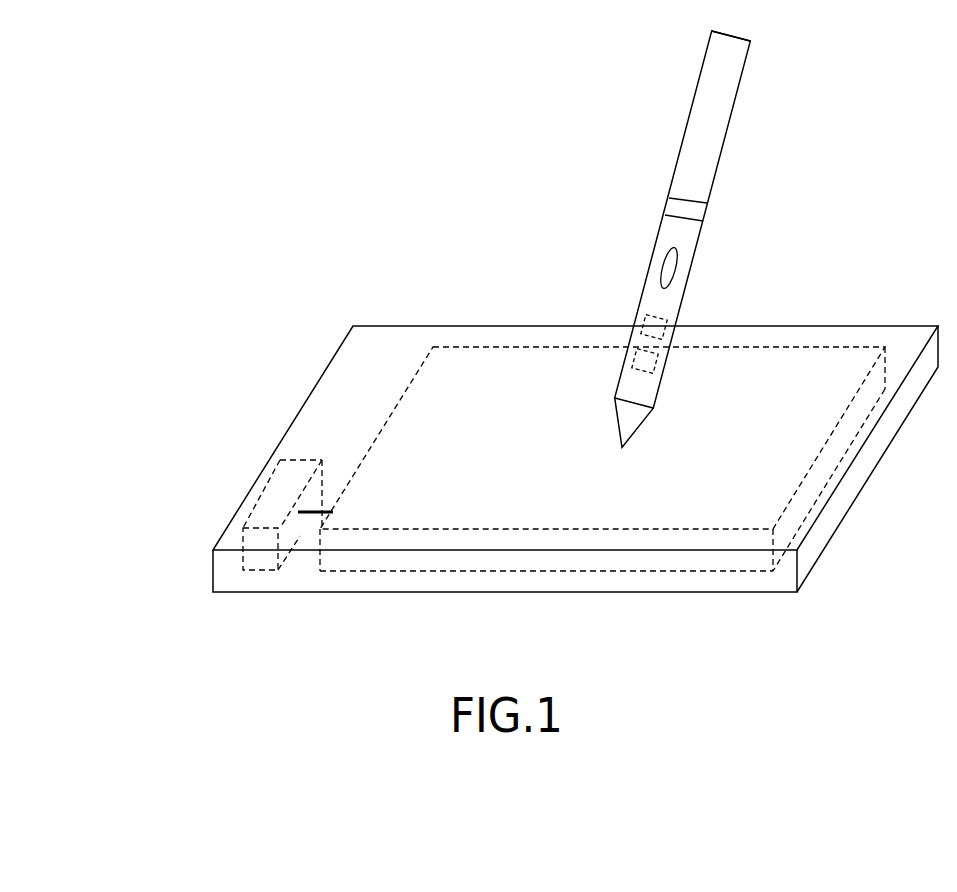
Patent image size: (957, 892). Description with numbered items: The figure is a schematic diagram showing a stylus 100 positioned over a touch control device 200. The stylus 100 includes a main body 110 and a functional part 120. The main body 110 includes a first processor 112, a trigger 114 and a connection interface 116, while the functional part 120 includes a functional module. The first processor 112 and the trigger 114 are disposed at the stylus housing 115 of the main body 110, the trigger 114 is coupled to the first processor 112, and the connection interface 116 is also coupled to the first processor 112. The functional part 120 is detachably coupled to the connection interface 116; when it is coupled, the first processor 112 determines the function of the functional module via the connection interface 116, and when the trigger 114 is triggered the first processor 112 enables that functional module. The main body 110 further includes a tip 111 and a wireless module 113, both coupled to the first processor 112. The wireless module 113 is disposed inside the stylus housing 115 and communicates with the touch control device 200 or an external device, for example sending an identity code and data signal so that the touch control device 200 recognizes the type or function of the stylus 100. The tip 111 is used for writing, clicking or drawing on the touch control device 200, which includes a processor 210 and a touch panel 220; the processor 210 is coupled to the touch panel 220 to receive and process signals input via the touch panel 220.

The stylus 100 is at (428, 48).
The main body 110 is at (505, 122).
The tip 111 is at (625, 412).
The first processor 112 is at (632, 350).
The wireless module 113 is at (640, 320).
The trigger 114 is at (648, 267).
The stylus housing 115 is at (672, 229).
The connection interface 116 is at (678, 203).
The functional part 120 is at (722, 67).
The touch control device 200 is at (323, 374).
The processor 210 is at (267, 485).
The touch panel 220 is at (822, 347).